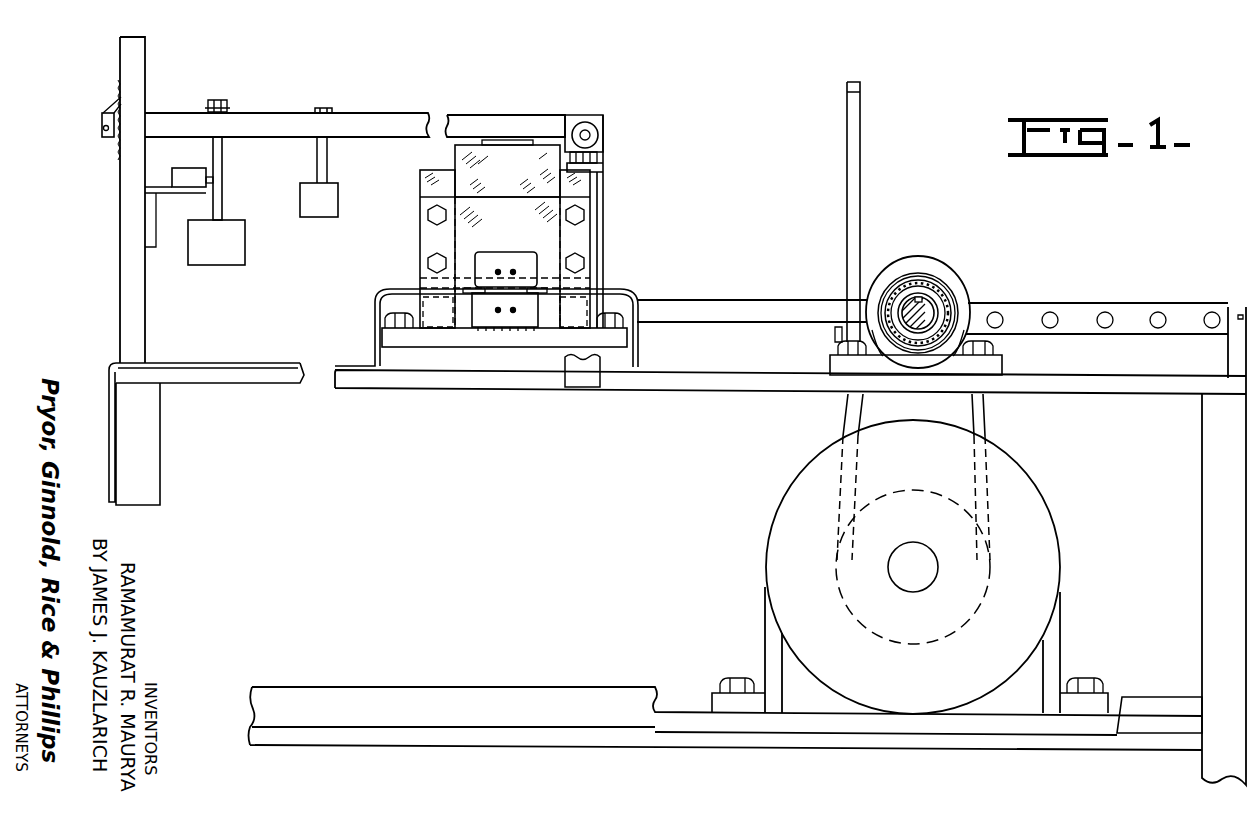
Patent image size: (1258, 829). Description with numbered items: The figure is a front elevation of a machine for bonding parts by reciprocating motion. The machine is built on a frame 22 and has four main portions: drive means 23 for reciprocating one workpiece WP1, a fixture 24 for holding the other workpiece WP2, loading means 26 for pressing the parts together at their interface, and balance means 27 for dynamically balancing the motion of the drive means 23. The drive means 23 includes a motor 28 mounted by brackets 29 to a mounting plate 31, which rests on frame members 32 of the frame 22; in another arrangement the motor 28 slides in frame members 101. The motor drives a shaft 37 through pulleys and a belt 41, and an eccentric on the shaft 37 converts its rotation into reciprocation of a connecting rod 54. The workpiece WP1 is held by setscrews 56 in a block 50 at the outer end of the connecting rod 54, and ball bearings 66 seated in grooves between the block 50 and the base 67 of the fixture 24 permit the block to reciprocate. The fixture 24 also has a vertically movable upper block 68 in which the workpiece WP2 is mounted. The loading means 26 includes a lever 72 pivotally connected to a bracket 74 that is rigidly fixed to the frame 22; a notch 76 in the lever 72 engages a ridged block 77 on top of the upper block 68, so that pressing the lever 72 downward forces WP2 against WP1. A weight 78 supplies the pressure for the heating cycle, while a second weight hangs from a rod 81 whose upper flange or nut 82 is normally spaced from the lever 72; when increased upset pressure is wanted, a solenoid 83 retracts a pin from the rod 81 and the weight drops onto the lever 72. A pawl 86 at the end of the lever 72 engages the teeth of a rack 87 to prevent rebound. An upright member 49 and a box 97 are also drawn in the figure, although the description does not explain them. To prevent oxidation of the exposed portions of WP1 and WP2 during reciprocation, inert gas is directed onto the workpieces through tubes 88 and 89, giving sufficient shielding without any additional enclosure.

The frame 22 is at (520, 384).
The drive means 23 is at (963, 263).
The fixture 24 is at (609, 256).
The loading means 26 is at (290, 110).
The balance means 27 is at (1089, 302).
The motor 28 is at (1038, 503).
The brackets 29 is at (765, 638).
The mounting plate 31 is at (986, 724).
The frame members 32 is at (836, 744).
The shaft 37 is at (931, 318).
The belt 41 is at (981, 418).
The upright pillar 49 is at (848, 195).
The block 50 is at (477, 318).
The connecting rod 54 is at (722, 305).
The setscrews 56 is at (515, 313).
The ball bearings 66 is at (497, 330).
The base 67 is at (428, 338).
The vertically movable block 68 is at (588, 207).
The lever 72 is at (382, 105).
The bracket 74 is at (598, 233).
The notch 76 is at (503, 142).
The ridged block 77 is at (508, 147).
The weight 78 is at (333, 213).
The rod 81 is at (224, 155).
The flange or nut 82 is at (224, 102).
The solenoid 83 is at (195, 146).
The pawl 86 is at (104, 126).
The rack 87 is at (121, 148).
The tube 88 is at (393, 291).
The tube 89 is at (629, 295).
The control box 97 is at (240, 257).
The frame members 101 is at (1166, 725).
The workpiece WP1 is at (515, 298).
The workpiece WP2 is at (495, 281).